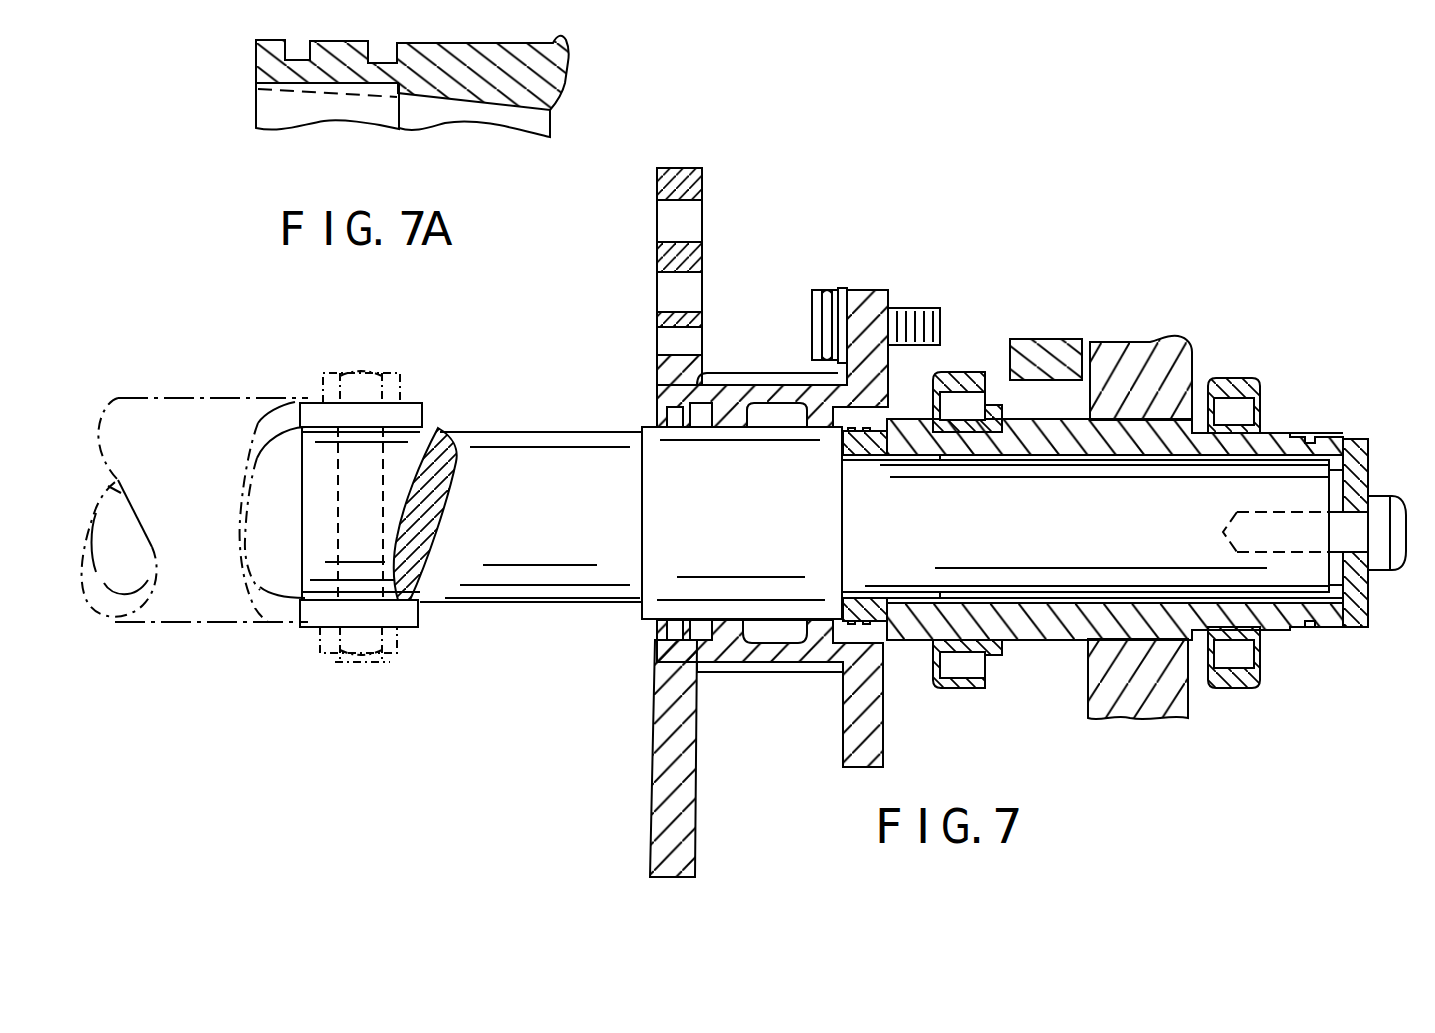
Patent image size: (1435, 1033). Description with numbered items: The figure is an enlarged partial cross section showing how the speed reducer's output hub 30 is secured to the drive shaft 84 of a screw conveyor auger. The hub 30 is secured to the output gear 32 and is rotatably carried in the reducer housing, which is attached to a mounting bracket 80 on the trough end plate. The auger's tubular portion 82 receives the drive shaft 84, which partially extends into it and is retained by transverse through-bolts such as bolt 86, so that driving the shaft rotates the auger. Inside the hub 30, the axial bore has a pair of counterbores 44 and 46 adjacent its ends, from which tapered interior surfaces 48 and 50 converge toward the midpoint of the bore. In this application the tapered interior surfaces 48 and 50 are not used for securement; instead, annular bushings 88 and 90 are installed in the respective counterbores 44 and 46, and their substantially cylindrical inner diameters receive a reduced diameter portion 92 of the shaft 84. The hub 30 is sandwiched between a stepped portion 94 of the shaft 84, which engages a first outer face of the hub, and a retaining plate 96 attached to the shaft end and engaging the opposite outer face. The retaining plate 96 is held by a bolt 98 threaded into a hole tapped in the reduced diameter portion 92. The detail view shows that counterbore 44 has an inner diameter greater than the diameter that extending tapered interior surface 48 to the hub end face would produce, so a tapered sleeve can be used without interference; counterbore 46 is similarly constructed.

In FIG. 7A, the output hub 30 is at (565, 41).
In FIG. 7, the output hub 30 is at (1040, 642).
In FIG. 7, the output gear 32 is at (1195, 357).
In FIG. 7A, the counterbore 44 is at (298, 110).
In FIG. 7, the counterbore 44 is at (843, 458).
In FIG. 7, the counterbore 46 is at (1324, 618).
In FIG. 7A, the tapered interior surface 48 is at (445, 113).
In FIG. 7, the tapered interior surface 48 is at (940, 455).
In FIG. 7, the tapered interior surface 50 is at (1190, 458).
In FIG. 7, the mounting bracket 80 is at (758, 378).
In FIG. 7, the tubular portion 82 is at (191, 600).
In FIG. 7, the drive shaft 84 is at (582, 610).
In FIG. 7, the bolt 86 is at (370, 374).
In FIG. 7, the annular bushing 88 is at (893, 468).
In FIG. 7, the annular bushing 90 is at (1290, 437).
In FIG. 7, the reduced diameter portion 92 is at (1072, 534).
In FIG. 7, the stepped portion 94 is at (757, 543).
In FIG. 7, the retaining plate 96 is at (1375, 600).
In FIG. 7, the bolt 98 is at (1412, 518).